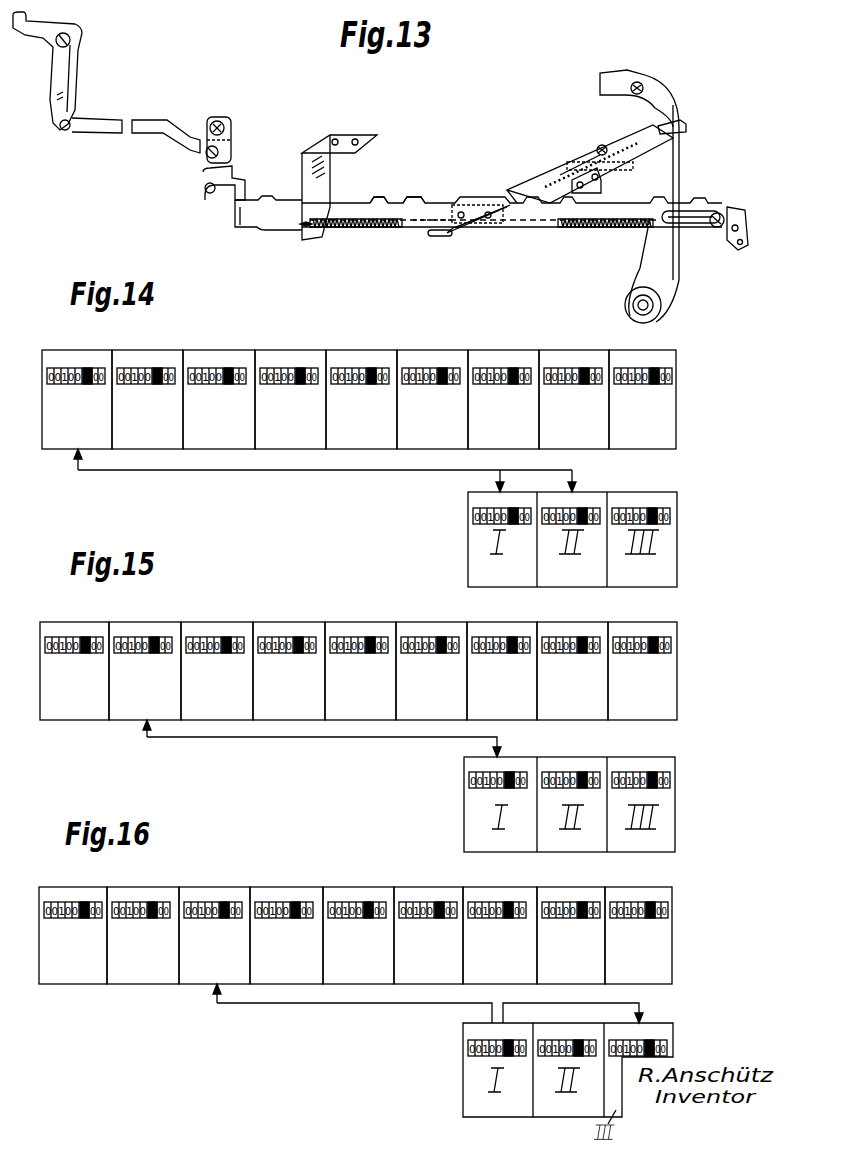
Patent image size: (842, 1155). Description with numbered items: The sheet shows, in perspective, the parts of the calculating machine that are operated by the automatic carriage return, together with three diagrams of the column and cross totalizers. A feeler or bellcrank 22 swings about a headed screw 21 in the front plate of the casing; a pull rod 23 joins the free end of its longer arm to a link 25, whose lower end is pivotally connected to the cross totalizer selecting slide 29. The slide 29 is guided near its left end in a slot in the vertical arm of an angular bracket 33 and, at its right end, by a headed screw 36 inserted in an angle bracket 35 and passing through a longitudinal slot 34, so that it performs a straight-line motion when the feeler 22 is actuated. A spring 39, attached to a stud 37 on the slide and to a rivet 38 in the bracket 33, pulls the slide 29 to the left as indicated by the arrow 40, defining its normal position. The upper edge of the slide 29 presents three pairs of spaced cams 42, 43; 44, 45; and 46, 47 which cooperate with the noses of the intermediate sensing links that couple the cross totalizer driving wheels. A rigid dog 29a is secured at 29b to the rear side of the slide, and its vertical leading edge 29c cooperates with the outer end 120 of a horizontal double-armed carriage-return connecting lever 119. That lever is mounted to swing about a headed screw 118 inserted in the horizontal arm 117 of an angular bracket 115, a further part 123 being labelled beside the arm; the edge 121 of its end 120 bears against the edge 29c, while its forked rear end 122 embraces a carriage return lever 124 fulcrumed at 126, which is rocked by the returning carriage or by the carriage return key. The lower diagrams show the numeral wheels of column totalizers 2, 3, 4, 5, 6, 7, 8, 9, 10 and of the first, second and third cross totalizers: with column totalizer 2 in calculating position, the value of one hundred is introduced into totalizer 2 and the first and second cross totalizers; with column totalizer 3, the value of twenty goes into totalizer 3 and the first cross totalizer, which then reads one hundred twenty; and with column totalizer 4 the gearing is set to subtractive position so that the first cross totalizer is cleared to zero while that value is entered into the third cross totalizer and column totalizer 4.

In FIG. 13, the headed screw 21 is at (80, 40).
In FIG. 13, the feeler or bellcrank 22 is at (68, 75).
In FIG. 13, the pull rod 23 is at (137, 133).
In FIG. 13, the link 25 is at (231, 134).
In FIG. 13, the cross totalizer selecting slide 29 is at (265, 218).
In FIG. 13, the rigid dog 29a is at (468, 232).
In FIG. 13, the dog attachment point 29b is at (487, 212).
In FIG. 13, the vertical leading edge 29c is at (450, 231).
In FIG. 13, the angular bracket 33 is at (320, 183).
In FIG. 13, the longitudinal slot 34 is at (694, 216).
In FIG. 13, the angle bracket 35 is at (739, 251).
In FIG. 13, the headed screw 36 is at (714, 238).
In FIG. 13, the stud 37 is at (648, 235).
In FIG. 13, the rivet 38 is at (311, 231).
In FIG. 13, the spring 39 is at (368, 230).
In FIG. 13, the arrow 40 is at (573, 283).
In FIG. 13, the cam 42 is at (378, 197).
In FIG. 13, the cam 43 is at (415, 198).
In FIG. 13, the cam 44 is at (525, 203).
In FIG. 13, the cam 45 is at (568, 203).
In FIG. 13, the cam 46 is at (675, 200).
In FIG. 13, the cam 47 is at (693, 210).
In FIG. 13, the angular bracket 115 is at (567, 163).
In FIG. 13, the horizontal arm 117 is at (620, 142).
In FIG. 13, the headed screw 118 is at (597, 150).
In FIG. 13, the carriage-return connecting lever 119 is at (603, 185).
In FIG. 13, the outer end 120 is at (437, 233).
In FIG. 13, the edge 121 is at (450, 235).
In FIG. 13, the rear end 122 is at (686, 131).
In FIG. 13, the hinge 123 is at (607, 140).
In FIG. 13, the carriage return lever 124 is at (667, 103).
In FIG. 13, the fulcrum 126 is at (663, 308).
In FIG. 14, the column totalizer 2 is at (78, 356).
In FIG. 15, the column totalizer 2 is at (76, 628).
In FIG. 16, the column totalizer 2 is at (76, 893).
In FIG. 14, the column totalizer 3 is at (151, 356).
In FIG. 15, the column totalizer 3 is at (148, 628).
In FIG. 16, the column totalizer 3 is at (146, 893).
In FIG. 14, the column totalizer 4 is at (226, 356).
In FIG. 15, the column totalizer 4 is at (218, 628).
In FIG. 16, the column totalizer 4 is at (216, 893).
In FIG. 14, the column totalizer 5 is at (299, 356).
In FIG. 15, the column totalizer 5 is at (291, 628).
In FIG. 16, the column totalizer 5 is at (293, 893).
In FIG. 14, the column totalizer 6 is at (369, 356).
In FIG. 15, the column totalizer 6 is at (364, 628).
In FIG. 16, the column totalizer 6 is at (359, 893).
In FIG. 14, the column totalizer 7 is at (433, 356).
In FIG. 15, the column totalizer 7 is at (433, 628).
In FIG. 16, the column totalizer 7 is at (429, 893).
In FIG. 14, the column totalizer 8 is at (507, 356).
In FIG. 15, the column totalizer 8 is at (503, 628).
In FIG. 16, the column totalizer 8 is at (496, 893).
In FIG. 14, the column totalizer 9 is at (578, 356).
In FIG. 15, the column totalizer 9 is at (571, 628).
In FIG. 16, the column totalizer 9 is at (568, 893).
In FIG. 14, the column totalizer 10 is at (641, 356).
In FIG. 15, the column totalizer 10 is at (641, 628).
In FIG. 16, the column totalizer 10 is at (638, 893).